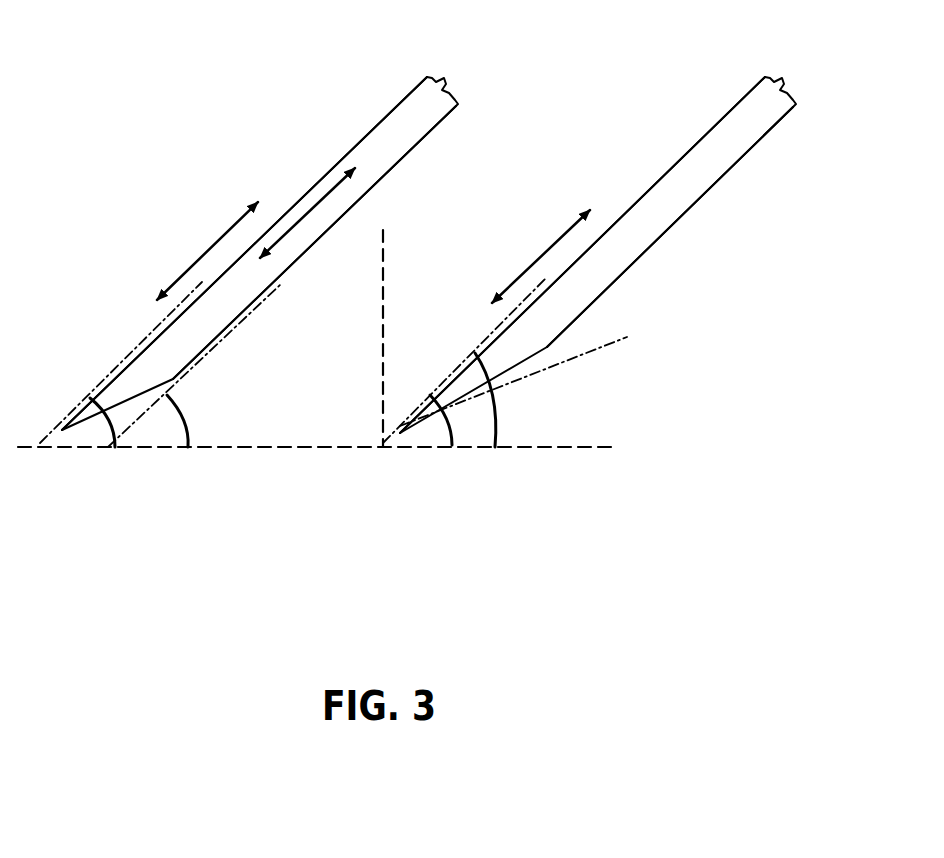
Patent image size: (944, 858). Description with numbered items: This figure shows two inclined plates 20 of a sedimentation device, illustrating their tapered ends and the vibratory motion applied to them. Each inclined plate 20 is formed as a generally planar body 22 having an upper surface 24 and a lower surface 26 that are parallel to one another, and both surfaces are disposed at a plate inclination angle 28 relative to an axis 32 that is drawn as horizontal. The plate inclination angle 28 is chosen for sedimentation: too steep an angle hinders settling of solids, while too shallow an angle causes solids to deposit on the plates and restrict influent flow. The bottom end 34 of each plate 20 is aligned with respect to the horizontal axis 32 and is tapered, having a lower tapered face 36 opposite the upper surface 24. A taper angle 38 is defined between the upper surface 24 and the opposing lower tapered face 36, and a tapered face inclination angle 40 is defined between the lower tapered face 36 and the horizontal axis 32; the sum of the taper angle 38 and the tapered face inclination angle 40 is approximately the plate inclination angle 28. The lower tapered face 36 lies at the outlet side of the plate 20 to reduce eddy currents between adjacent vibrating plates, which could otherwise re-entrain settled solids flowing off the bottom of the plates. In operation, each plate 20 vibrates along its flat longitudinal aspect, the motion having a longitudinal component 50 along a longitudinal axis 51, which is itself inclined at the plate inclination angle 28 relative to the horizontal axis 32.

The inclined plate 20 is at (410, 70).
The planar body 22 is at (402, 123).
The upper surface 24 is at (346, 144).
The lower surface 26 is at (404, 170).
The plate inclination angle 28 is at (80, 446).
The horizontal axis 32 is at (580, 450).
The bottom end 34 is at (105, 400).
The lower tapered face 36 is at (471, 416).
The taper angle 38 is at (547, 348).
The tapered face inclination angle 40 is at (497, 415).
The longitudinal component 50 is at (308, 210).
The longitudinal axis 51 is at (203, 257).